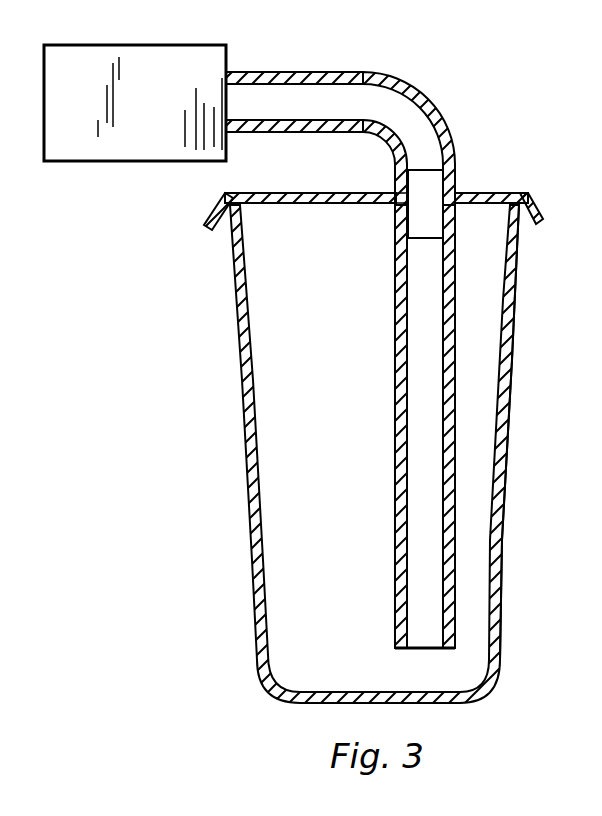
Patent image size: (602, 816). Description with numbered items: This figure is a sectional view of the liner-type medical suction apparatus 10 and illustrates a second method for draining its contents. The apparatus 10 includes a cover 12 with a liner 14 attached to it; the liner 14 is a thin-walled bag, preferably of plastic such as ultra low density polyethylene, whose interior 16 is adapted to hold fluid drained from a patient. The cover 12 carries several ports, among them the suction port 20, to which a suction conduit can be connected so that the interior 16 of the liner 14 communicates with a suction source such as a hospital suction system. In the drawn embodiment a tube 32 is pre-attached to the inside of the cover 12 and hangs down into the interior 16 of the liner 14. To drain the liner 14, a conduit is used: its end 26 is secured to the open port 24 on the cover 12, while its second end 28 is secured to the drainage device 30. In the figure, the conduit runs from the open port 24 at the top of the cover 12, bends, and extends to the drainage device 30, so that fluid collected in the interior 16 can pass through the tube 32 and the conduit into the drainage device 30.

The liner-type medical suction apparatus 10 is at (519, 262).
The cover 12 is at (528, 200).
The liner 14 is at (511, 405).
The interior 16 is at (478, 568).
The suction port 20 is at (418, 78).
The open port 24 is at (448, 177).
The end of the conduit 26 is at (396, 187).
The second end 28 is at (235, 72).
The drainage device 30 is at (152, 140).
The tube 32 is at (398, 468).